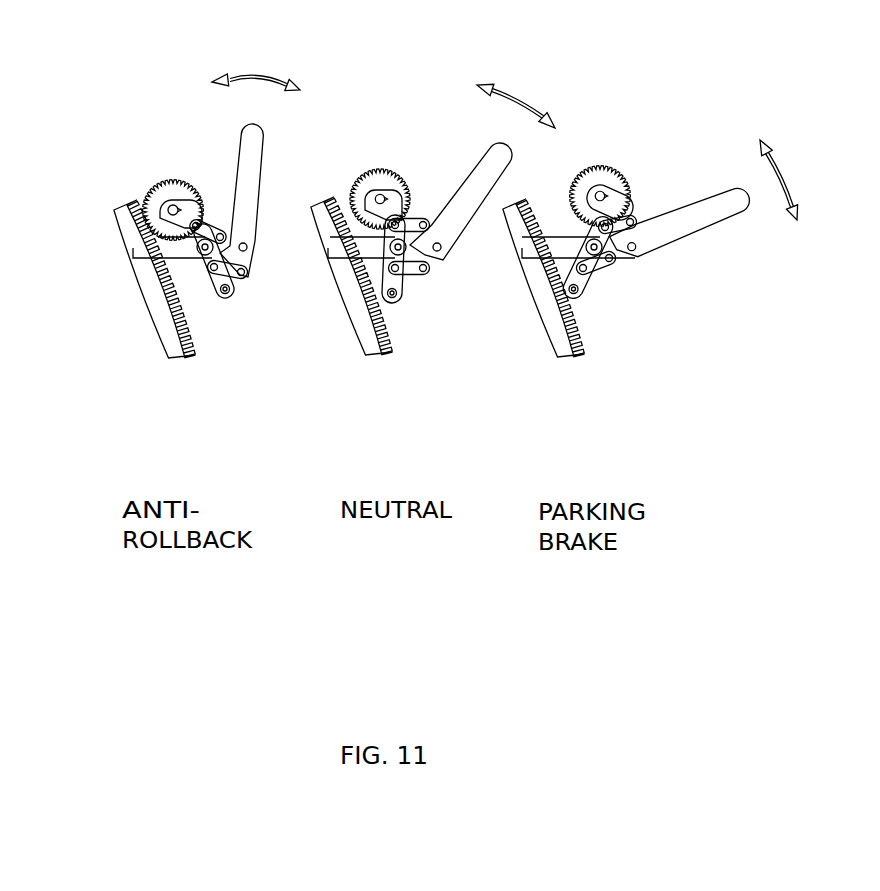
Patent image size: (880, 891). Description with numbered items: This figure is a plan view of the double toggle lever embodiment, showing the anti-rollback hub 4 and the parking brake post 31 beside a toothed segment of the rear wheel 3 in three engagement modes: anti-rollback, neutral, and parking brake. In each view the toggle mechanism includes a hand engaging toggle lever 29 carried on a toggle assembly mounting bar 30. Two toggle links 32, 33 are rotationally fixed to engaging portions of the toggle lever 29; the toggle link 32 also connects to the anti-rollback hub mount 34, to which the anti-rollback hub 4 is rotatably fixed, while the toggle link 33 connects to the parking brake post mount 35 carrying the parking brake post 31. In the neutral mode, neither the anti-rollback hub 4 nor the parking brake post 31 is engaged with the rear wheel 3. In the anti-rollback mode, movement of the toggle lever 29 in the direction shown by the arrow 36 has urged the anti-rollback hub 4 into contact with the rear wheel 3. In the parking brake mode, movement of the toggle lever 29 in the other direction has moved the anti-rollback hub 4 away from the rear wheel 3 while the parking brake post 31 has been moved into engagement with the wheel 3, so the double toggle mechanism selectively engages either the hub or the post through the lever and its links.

The rear wheel 3 is at (104, 228).
The anti-rollback hub 4 is at (141, 178).
The toggle lever 29 is at (270, 171).
The toggle assembly mounting bar 30 is at (192, 268).
The parking brake post 31 is at (232, 307).
The toggle link 32 is at (203, 206).
The toggle link 33 is at (248, 292).
The hub mount link 34 is at (176, 189).
The parking brake post mount 35 is at (412, 298).
The arrow 36 is at (262, 68).